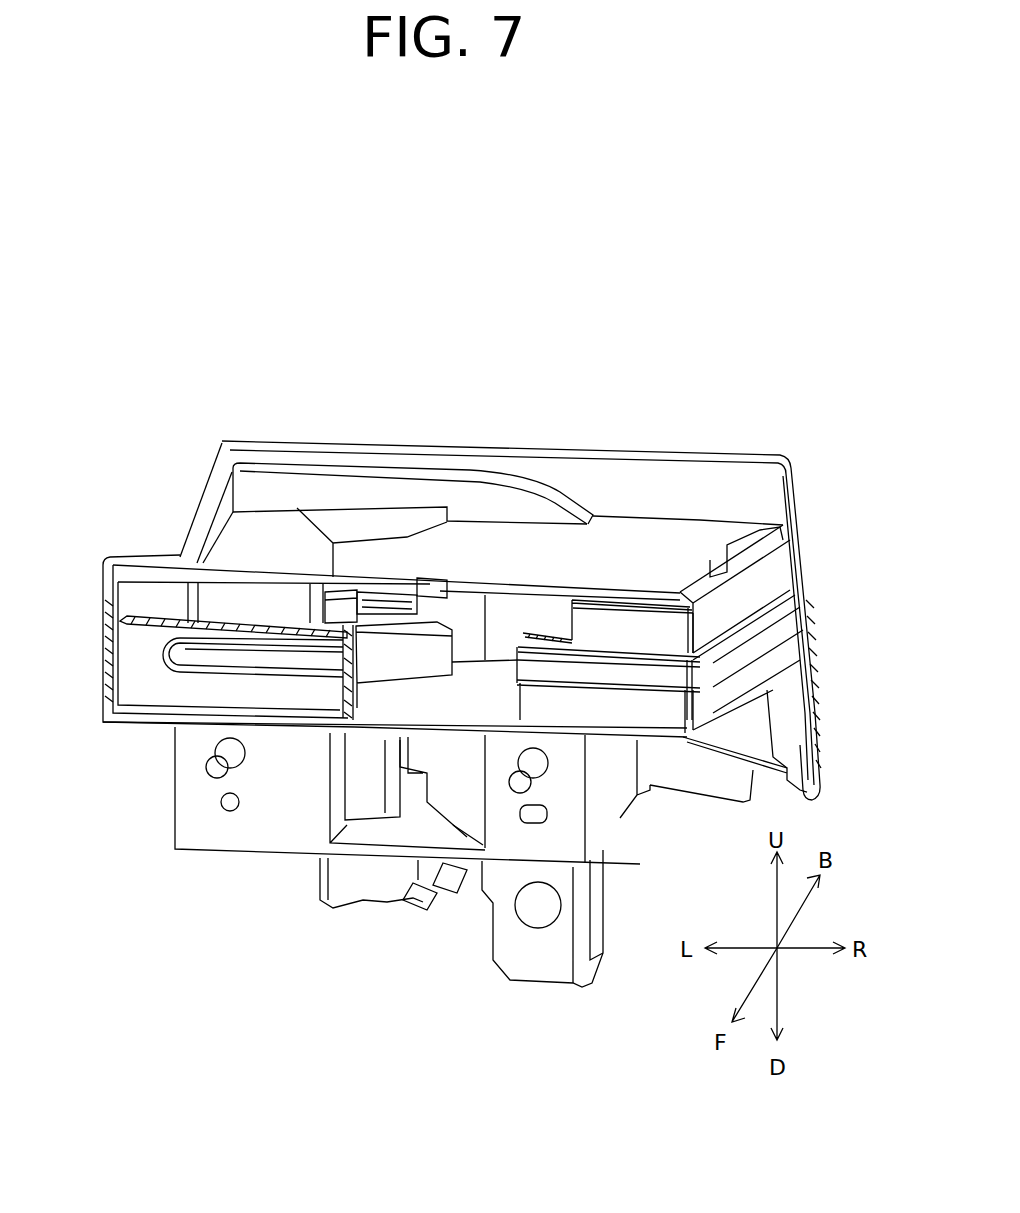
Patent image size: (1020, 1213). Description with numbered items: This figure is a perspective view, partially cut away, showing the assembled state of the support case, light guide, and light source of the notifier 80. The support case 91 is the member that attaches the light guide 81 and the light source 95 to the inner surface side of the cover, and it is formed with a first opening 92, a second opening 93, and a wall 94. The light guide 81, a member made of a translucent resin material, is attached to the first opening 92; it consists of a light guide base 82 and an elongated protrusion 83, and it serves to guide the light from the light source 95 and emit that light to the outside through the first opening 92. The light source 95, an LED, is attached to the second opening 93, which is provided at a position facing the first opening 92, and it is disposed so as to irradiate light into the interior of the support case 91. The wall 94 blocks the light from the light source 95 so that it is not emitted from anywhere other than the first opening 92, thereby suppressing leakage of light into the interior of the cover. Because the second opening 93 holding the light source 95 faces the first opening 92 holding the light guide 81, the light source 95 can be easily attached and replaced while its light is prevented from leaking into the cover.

The notifier 80 is at (615, 326).
The light guide 81 is at (135, 693).
The light guide base 82 is at (290, 700).
The elongated protrusion 83 is at (243, 658).
The support case 91 is at (531, 441).
The first opening 92 is at (117, 660).
The second opening 93 is at (333, 615).
The wall 94 is at (658, 552).
The light source 95 is at (377, 608).